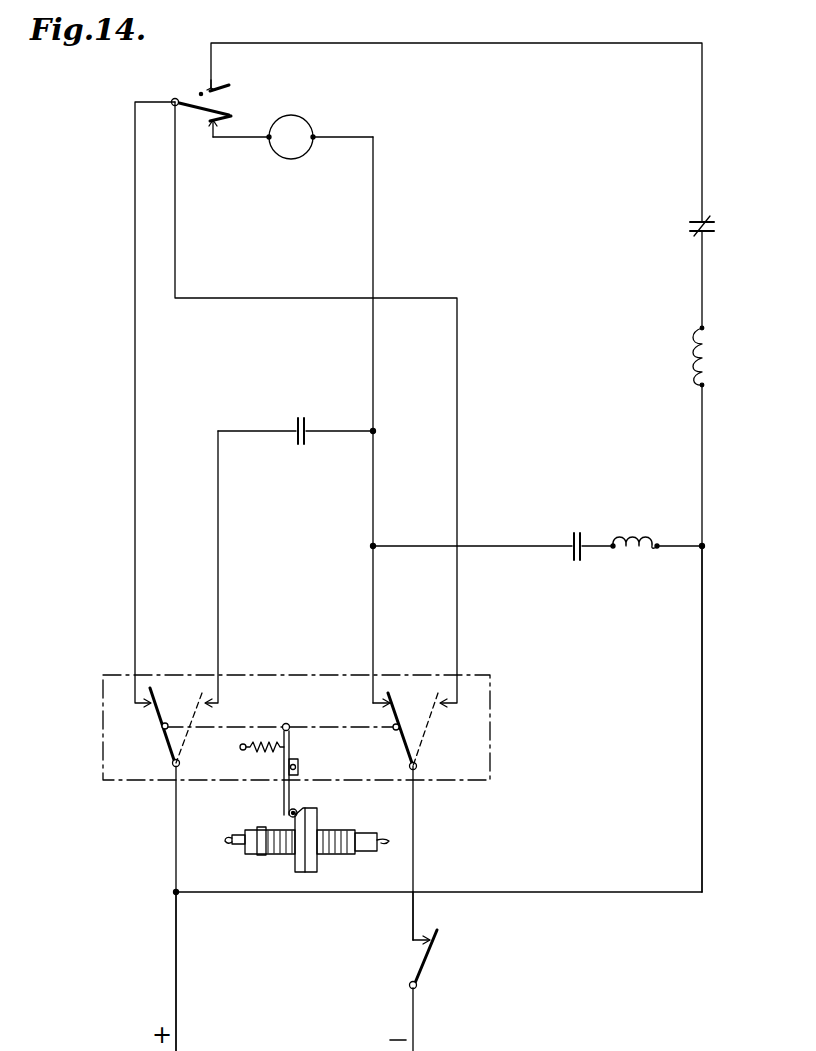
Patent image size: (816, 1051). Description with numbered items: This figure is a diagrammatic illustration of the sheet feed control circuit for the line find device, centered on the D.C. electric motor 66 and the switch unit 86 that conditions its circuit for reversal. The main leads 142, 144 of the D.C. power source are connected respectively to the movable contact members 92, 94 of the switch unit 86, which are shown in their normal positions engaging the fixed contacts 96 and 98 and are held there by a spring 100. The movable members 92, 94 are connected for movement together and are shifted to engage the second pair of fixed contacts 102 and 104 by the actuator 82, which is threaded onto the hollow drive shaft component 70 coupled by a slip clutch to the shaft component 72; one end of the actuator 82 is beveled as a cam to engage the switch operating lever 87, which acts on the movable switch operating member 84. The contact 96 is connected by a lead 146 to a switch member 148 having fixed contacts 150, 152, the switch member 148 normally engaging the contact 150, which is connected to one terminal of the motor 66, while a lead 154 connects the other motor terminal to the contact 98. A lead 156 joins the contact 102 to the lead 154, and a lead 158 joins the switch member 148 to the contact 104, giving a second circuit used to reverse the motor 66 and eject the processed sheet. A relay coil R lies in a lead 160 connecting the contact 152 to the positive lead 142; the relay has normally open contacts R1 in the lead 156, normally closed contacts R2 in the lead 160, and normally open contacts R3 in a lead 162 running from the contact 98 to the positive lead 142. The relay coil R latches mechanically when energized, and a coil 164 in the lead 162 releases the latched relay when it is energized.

The fixed contact member 152 is at (200, 90).
The fixed contact member 150 is at (230, 118).
The switch member 148 is at (193, 113).
The D.C. electric motor 66 is at (310, 123).
The lead 154 is at (373, 238).
The lead 146 is at (135, 312).
The lead 158 is at (457, 453).
The lead 156 is at (218, 518).
The lead 162 is at (511, 548).
The lead 160 is at (700, 643).
The coil 164 is at (641, 530).
The normally open contacts R1 is at (305, 418).
The normally closed contacts R2 is at (693, 225).
The normally open contacts R3 is at (577, 533).
The relay coil R is at (694, 350).
The switch unit 86 is at (120, 784).
The fixed contact member 96 is at (152, 708).
The movable contact member 92 is at (166, 737).
The fixed contact member 102 is at (207, 705).
The fixed contact member 98 is at (385, 706).
The movable contact member 94 is at (402, 746).
The fixed contact member 104 is at (437, 708).
The movable switch operating member 84 is at (357, 730).
The spring 100 is at (258, 755).
The switch operating lever 87 is at (283, 795).
The drive shaft component 70 is at (335, 854).
The shaft component 72 is at (233, 847).
The actuator 82 is at (298, 862).
The main lead 142 is at (177, 946).
The main lead 144 is at (412, 918).